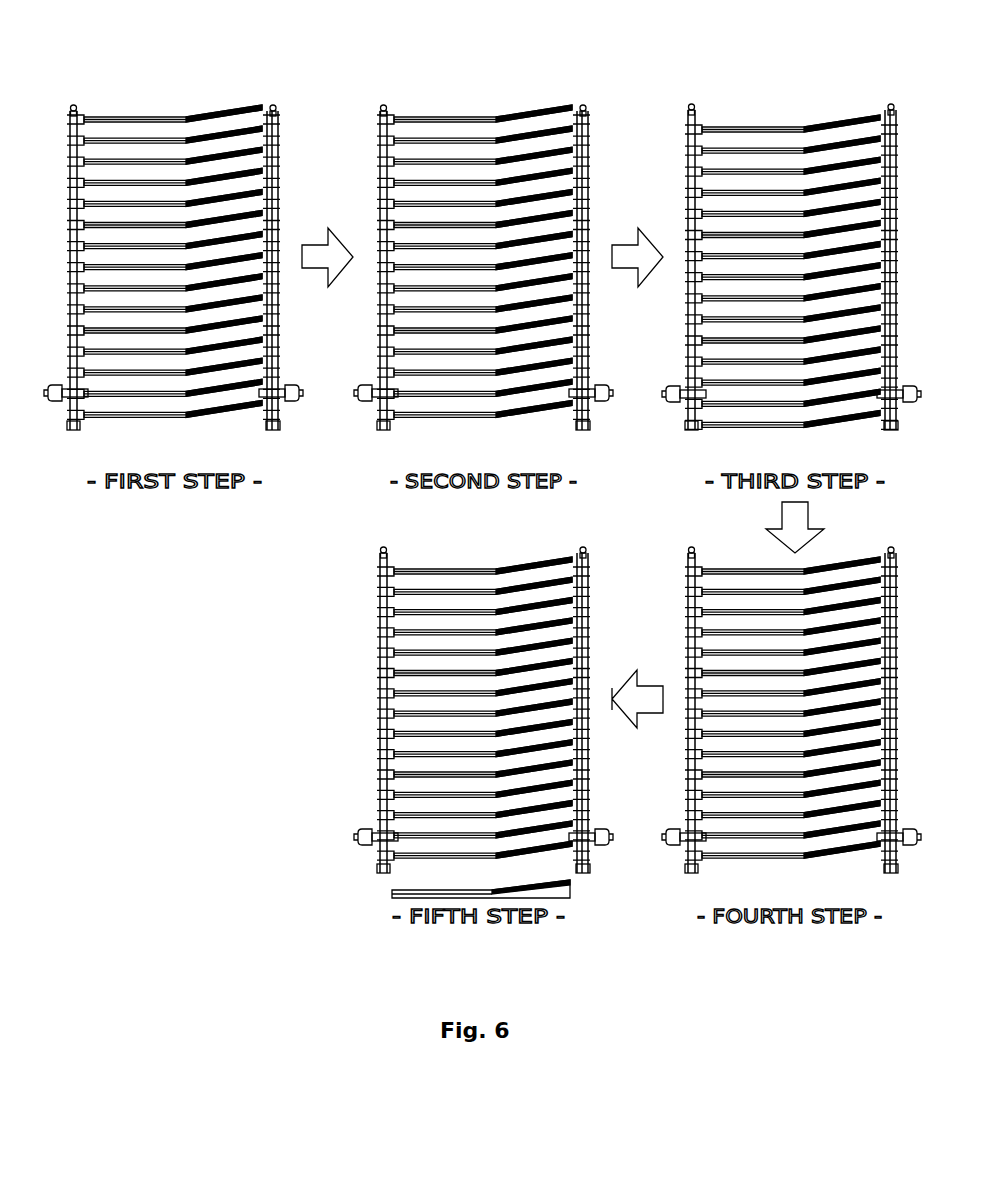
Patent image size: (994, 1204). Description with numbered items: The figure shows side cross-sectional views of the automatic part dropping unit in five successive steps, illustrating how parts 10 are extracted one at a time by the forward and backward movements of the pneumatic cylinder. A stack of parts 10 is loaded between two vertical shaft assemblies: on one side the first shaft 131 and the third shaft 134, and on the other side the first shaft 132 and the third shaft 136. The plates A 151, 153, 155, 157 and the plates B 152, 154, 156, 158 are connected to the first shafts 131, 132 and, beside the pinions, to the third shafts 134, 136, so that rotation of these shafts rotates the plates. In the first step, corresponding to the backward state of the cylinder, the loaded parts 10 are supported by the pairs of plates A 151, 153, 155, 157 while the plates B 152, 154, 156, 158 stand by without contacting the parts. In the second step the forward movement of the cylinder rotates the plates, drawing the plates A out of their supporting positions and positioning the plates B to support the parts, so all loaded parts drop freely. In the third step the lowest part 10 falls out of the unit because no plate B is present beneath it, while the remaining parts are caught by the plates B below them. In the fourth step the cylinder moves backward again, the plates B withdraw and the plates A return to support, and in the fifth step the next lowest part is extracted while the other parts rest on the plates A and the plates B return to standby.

The part 10 is at (209, 116).
The first shaft 131 is at (291, 234).
The third shaft 134 is at (275, 110).
The first shaft 132 is at (85, 234).
The third shaft 136 is at (79, 113).
The plate A 151 is at (173, 262).
The plate A 153 is at (173, 262).
The plate A 155 is at (173, 262).
The plate A 157 is at (173, 262).
The plate B 152 is at (483, 287).
The plate B 154 is at (483, 287).
The plate B 156 is at (483, 287).
The plate B 158 is at (483, 287).